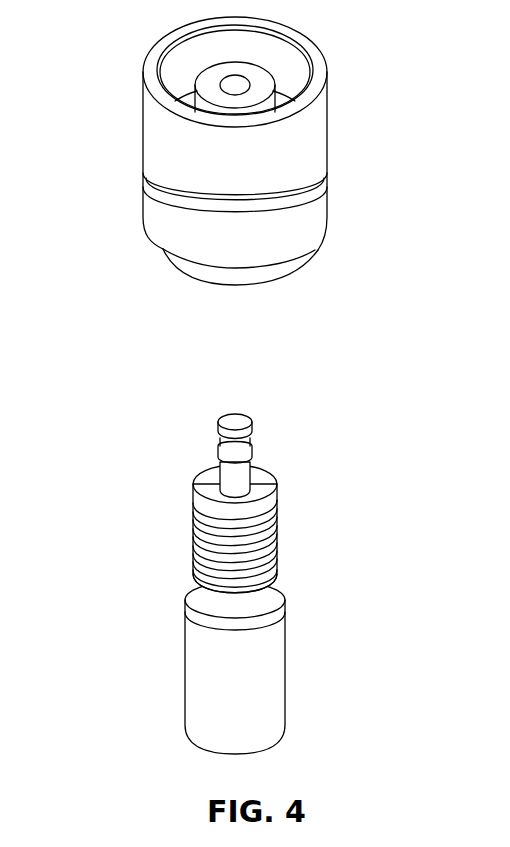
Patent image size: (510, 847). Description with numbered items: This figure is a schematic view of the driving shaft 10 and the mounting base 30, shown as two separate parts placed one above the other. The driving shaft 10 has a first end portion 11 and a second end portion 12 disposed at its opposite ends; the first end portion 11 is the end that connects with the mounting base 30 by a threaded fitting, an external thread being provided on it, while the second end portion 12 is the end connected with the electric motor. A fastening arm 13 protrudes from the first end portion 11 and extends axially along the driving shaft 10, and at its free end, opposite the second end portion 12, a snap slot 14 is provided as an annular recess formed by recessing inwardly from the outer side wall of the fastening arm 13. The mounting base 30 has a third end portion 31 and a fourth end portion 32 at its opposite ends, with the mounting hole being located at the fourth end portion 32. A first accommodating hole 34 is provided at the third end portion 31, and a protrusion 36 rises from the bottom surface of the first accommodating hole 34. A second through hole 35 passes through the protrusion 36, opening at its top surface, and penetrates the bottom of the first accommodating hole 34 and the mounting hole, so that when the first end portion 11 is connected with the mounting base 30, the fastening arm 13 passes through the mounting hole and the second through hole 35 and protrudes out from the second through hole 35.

The driving shaft 10 is at (295, 593).
The first end portion 11 is at (278, 544).
The second end portion 12 is at (282, 742).
The fastening arm 13 is at (243, 476).
The snap slot 14 is at (241, 450).
The mounting base 30 is at (251, 157).
The third end portion 31 is at (328, 88).
The fourth end portion 32 is at (290, 272).
The first accommodating hole 34 is at (185, 65).
The second through hole 35 is at (245, 80).
The protrusion 36 is at (220, 100).